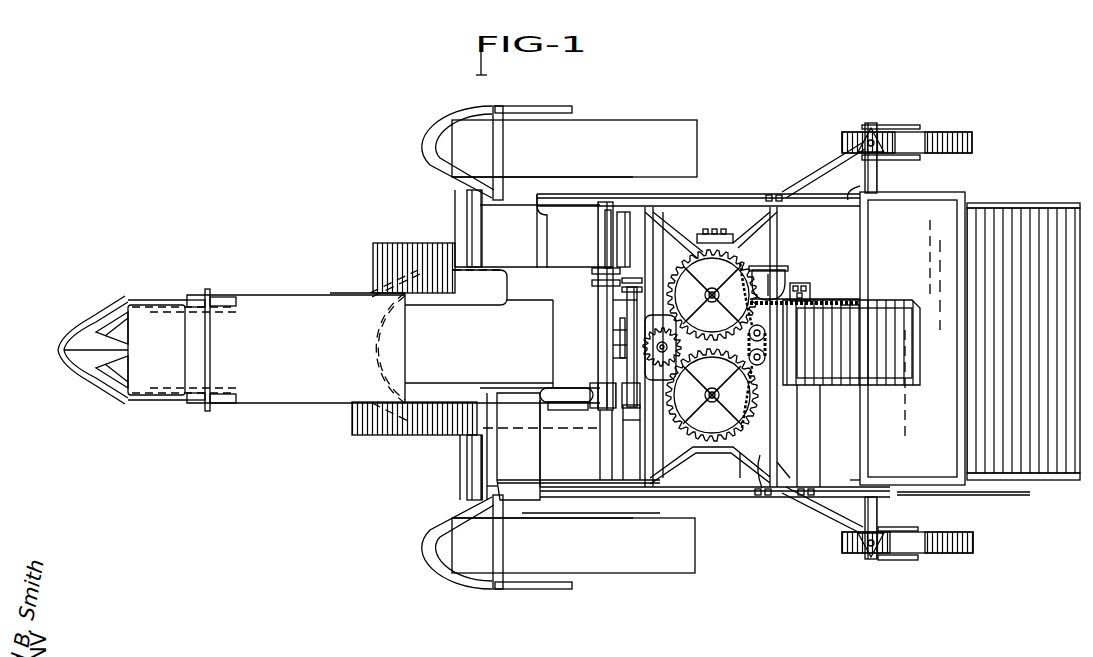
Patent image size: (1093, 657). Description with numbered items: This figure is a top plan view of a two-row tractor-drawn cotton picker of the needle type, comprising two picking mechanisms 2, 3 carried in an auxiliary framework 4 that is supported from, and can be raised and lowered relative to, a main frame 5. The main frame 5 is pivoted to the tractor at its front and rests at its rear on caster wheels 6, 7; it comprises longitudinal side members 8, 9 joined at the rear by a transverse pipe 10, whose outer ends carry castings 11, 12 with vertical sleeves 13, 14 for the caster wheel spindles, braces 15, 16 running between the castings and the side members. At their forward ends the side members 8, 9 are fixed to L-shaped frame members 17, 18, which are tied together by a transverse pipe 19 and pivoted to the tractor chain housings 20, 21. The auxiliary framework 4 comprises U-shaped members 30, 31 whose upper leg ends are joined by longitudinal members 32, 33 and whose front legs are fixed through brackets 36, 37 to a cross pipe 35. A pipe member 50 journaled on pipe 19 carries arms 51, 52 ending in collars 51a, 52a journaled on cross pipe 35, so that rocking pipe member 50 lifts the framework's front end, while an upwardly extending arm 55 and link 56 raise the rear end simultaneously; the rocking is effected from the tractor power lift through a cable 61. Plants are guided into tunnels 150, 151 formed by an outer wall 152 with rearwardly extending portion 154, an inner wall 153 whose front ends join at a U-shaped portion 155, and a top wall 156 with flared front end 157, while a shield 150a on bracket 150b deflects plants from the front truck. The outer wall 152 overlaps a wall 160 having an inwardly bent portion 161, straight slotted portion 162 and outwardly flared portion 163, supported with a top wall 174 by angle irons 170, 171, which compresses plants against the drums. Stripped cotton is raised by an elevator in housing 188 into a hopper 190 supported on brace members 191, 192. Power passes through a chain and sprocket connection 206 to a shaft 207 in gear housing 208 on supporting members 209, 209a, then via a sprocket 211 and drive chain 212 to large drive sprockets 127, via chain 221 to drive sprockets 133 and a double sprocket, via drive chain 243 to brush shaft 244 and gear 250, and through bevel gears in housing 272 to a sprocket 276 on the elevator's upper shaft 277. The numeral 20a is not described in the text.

The picking mechanism 2 is at (728, 193).
The picking mechanism 3 is at (695, 497).
The auxiliary framework 4 is at (818, 284).
The main frame 5 is at (695, 192).
The caster wheel 6 is at (952, 135).
The caster wheel 7 is at (970, 545).
The side member 8 is at (743, 203).
The side member 9 is at (781, 497).
The transverse pipe 10 is at (880, 518).
The casting 11 is at (868, 125).
The casting 12 is at (860, 555).
The vertical sleeve 13 is at (878, 131).
The vertical sleeve 14 is at (873, 558).
The brace 15 is at (825, 170).
The brace 16 is at (827, 533).
The L-shaped frame member 17 is at (600, 190).
The L-shaped frame member 18 is at (577, 500).
The transverse pipe 19 is at (598, 232).
The chain housing 20 is at (590, 185).
The small pinion 20a is at (663, 347).
The chain housing 21 is at (580, 508).
The U-shaped member 30 is at (540, 251).
The U-shaped member 31 is at (613, 358).
The longitudinal member 32 is at (850, 295).
The longitudinal member 33 is at (820, 395).
The cross pipe 35 is at (620, 320).
The bracket 36 is at (628, 239).
The bracket 37 is at (672, 497).
The pipe member 50 is at (597, 388).
The arm 51 is at (598, 282).
The collar 51a is at (603, 250).
The arm 52 is at (537, 402).
The collar 52a is at (600, 440).
The upwardly extending arm 55 is at (545, 393).
The link 56 is at (797, 436).
The cable 61 is at (568, 414).
The large drive sprocket 127 is at (712, 345).
The drive sprocket 133 is at (740, 262).
The tunnel 150 is at (465, 213).
The shield 150a is at (124, 322).
The bracket 150b is at (86, 383).
The tunnel 151 is at (460, 497).
The outer wall 152 is at (445, 185).
The inner wall 153 is at (455, 255).
The rearwardly extending portion 154 is at (490, 108).
The U-shaped portion 155 is at (352, 330).
The top wall 156 is at (480, 472).
The flared front end 157 is at (470, 482).
The wall 160 is at (740, 460).
The inwardly bent portion 161 is at (668, 497).
The straight portion 162 is at (690, 450).
The outwardly flared portion 163 is at (778, 470).
The angle iron 170 is at (653, 440).
The angle iron 171 is at (777, 441).
The top wall 174 is at (762, 455).
The housing 188 is at (866, 342).
The hopper 190 is at (1078, 230).
The brace member 191 is at (880, 183).
The brace member 192 is at (850, 482).
The chain and sprocket connection 206 is at (613, 330).
The shaft 207 is at (613, 345).
The gear housing 208 is at (670, 255).
The supporting member 209 is at (613, 302).
The supporting member 209a is at (716, 232).
The sprocket 211 is at (721, 295).
The drive chain 212 is at (845, 318).
The chain 221 is at (712, 389).
The drive chain 243 is at (722, 395).
The shaft 244 is at (712, 299).
The gear 250 is at (765, 352).
The housing 272 is at (800, 283).
The sprocket 276 is at (830, 301).
The upper shaft 277 is at (836, 300).